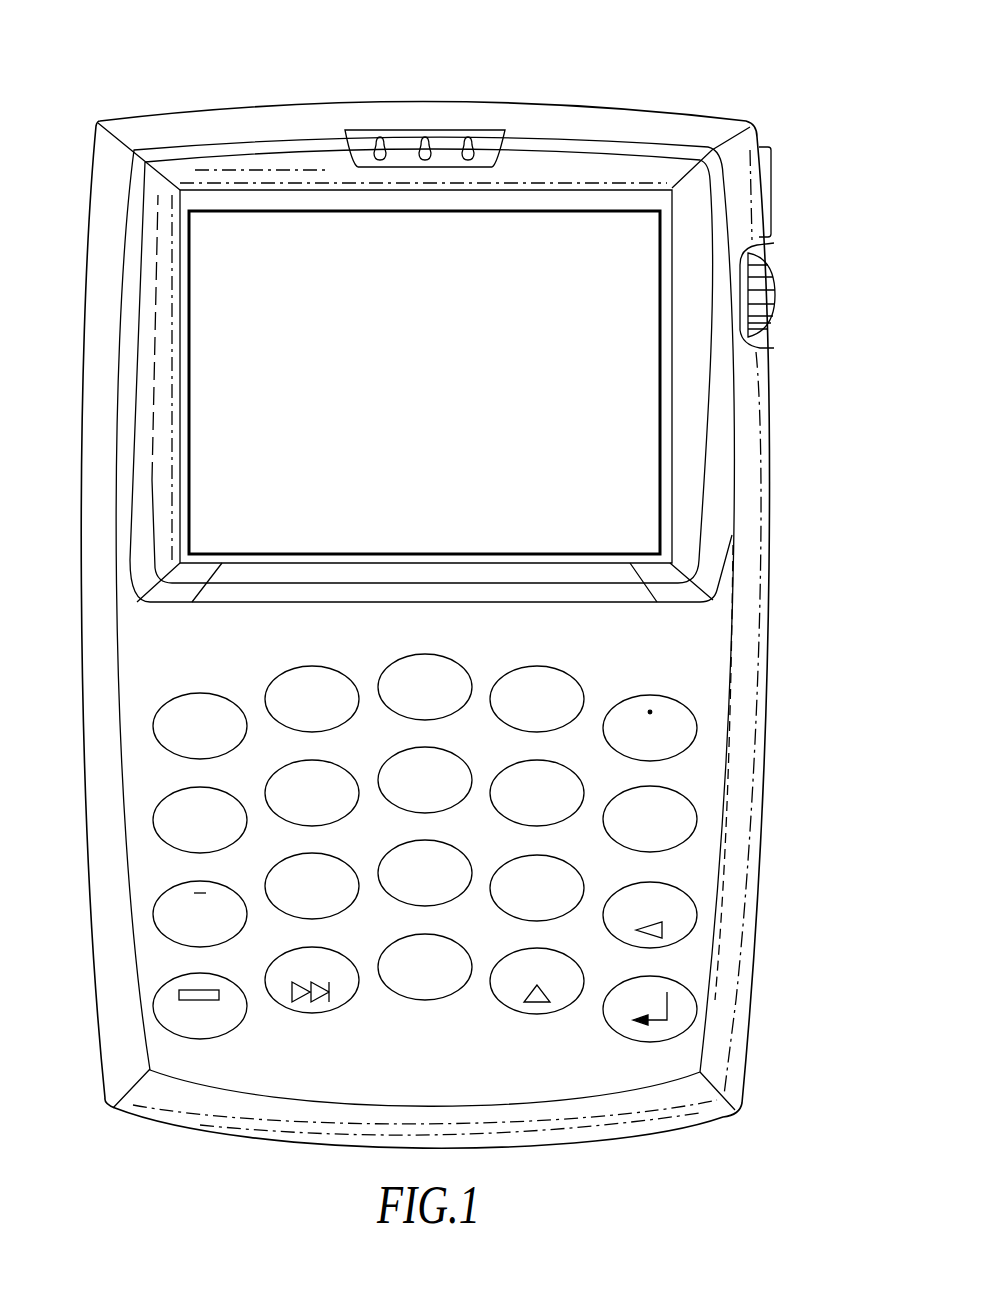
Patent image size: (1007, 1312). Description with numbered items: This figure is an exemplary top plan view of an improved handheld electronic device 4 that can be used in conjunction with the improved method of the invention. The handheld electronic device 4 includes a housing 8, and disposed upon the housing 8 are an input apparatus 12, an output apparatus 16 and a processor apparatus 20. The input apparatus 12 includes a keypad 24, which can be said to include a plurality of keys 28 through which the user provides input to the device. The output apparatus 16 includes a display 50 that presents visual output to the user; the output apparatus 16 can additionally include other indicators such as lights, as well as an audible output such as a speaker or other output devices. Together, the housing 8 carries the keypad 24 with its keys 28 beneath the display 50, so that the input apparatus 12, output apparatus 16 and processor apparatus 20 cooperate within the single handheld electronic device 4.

The handheld electronic device 4 is at (620, 75).
The housing 8 is at (667, 117).
The input apparatus 12 is at (816, 458).
The output apparatus 16 is at (216, 481).
The processor apparatus 20 is at (138, 666).
The keypad 24 is at (706, 776).
The keys 28 is at (633, 693).
The display 50 is at (211, 355).